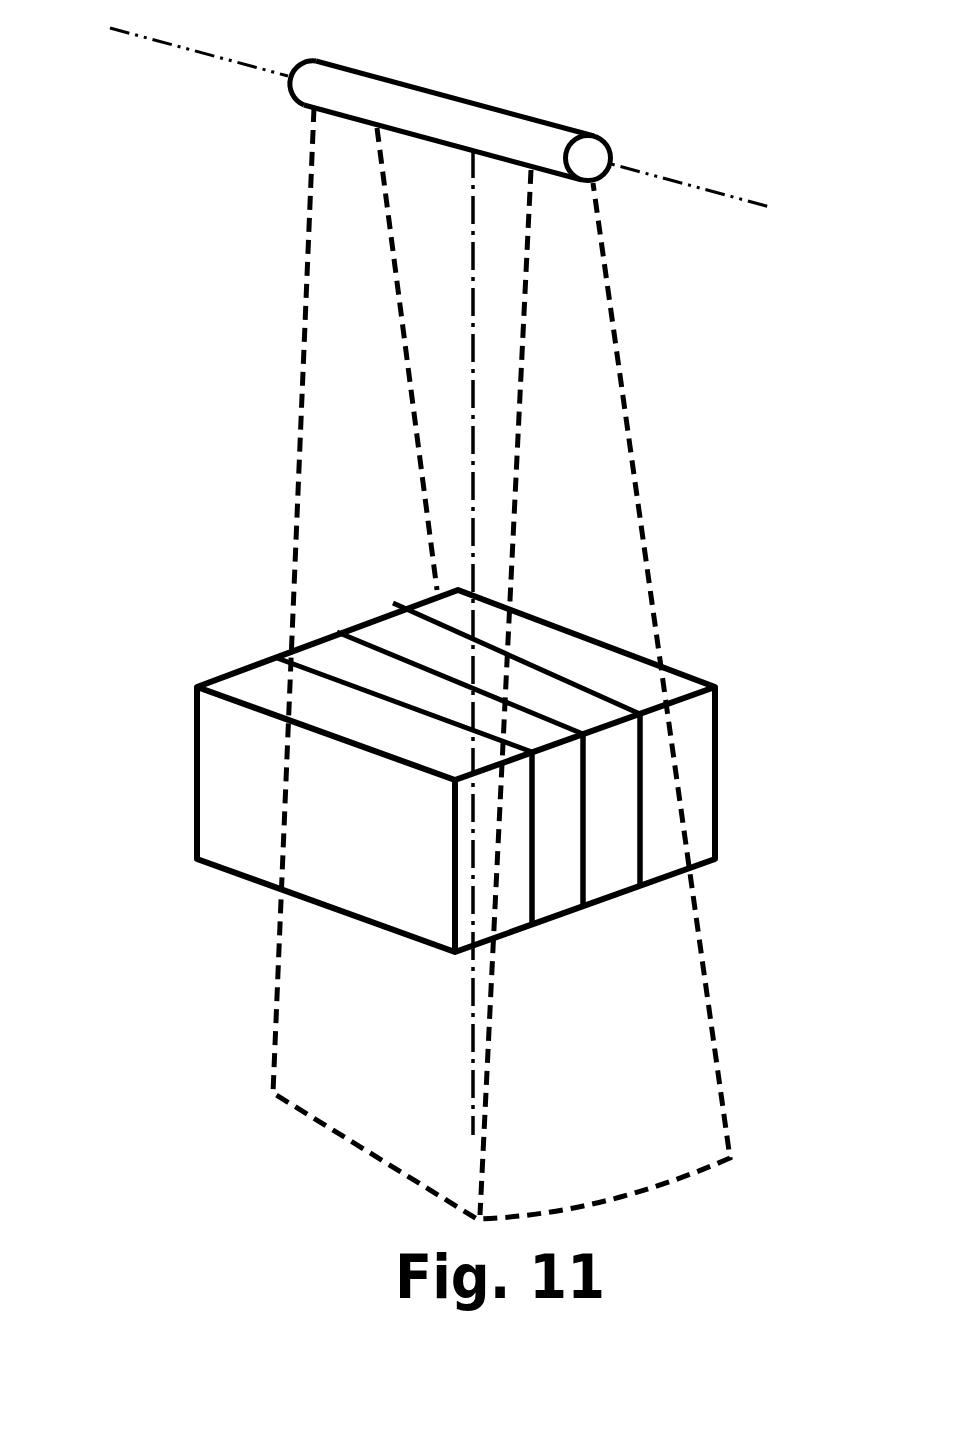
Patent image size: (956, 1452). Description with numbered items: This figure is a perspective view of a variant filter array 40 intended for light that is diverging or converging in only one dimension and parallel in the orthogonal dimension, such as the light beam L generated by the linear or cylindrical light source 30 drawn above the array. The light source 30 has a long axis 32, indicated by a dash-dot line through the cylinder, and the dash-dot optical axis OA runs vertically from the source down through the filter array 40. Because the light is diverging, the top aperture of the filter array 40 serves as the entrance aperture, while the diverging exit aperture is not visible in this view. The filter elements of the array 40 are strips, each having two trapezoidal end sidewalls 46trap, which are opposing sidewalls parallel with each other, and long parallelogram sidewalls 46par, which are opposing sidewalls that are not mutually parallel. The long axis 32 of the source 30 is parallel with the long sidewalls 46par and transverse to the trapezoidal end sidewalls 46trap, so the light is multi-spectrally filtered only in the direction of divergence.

The linear or cylindrical light source 30 is at (452, 110).
The long axis 32 is at (660, 177).
The optical axis OA is at (475, 248).
The light beam L is at (307, 333).
The variant filter array 40 is at (422, 799).
The long sidewalls 46par is at (326, 819).
The end sidewalls 46trap is at (672, 820).